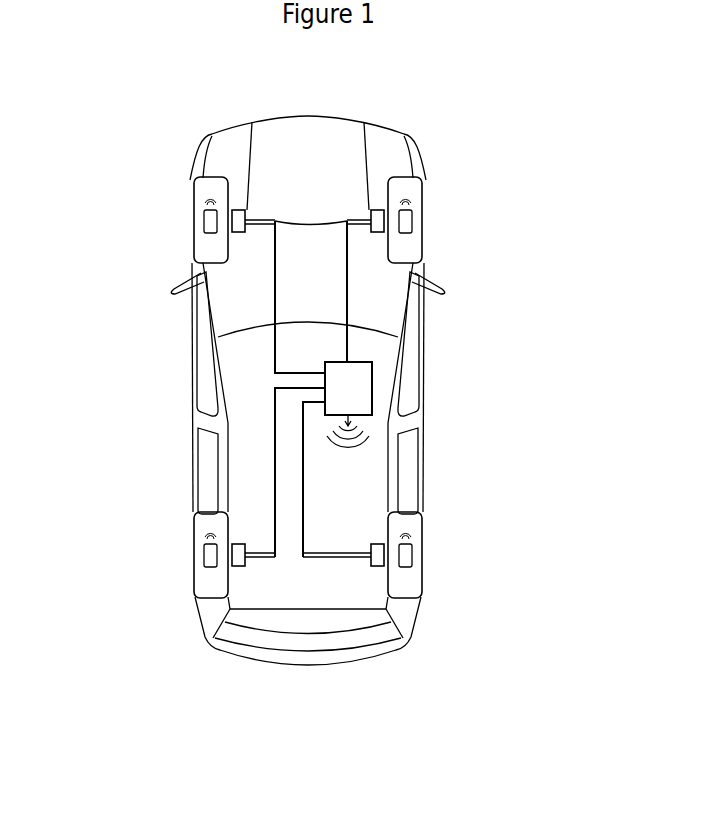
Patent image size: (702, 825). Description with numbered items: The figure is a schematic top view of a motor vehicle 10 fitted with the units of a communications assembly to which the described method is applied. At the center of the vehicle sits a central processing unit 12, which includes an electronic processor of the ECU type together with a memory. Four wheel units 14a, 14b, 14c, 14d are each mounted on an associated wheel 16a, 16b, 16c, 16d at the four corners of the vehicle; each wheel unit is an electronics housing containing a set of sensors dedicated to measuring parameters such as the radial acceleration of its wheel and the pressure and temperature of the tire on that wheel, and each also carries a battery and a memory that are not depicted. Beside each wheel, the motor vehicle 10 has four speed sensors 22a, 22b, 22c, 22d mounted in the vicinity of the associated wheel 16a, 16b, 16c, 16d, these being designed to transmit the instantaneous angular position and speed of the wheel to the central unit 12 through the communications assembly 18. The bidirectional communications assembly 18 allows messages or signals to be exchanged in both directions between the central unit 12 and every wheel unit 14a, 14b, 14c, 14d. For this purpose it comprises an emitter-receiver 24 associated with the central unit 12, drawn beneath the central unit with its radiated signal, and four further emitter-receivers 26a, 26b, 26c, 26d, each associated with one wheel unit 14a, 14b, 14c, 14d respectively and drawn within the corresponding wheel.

The motor vehicle 10 is at (462, 126).
The central processing unit 12 is at (343, 387).
The wheel unit 14a is at (206, 225).
The wheel unit 14b is at (410, 225).
The wheel unit 14c is at (410, 560).
The wheel unit 14d is at (206, 560).
The wheel 16a is at (185, 188).
The wheel 16b is at (432, 188).
The wheel 16c is at (432, 521).
The wheel 16d is at (185, 521).
The bidirectional communications assembly 18 is at (374, 429).
The speed sensor 22a is at (239, 208).
The speed sensor 22b is at (377, 208).
The speed sensor 22c is at (378, 568).
The speed sensor 22d is at (238, 568).
The emitter-receiver 24 is at (365, 416).
The emitter-receiver 26a is at (204, 204).
The emitter-receiver 26b is at (412, 204).
The emitter-receiver 26c is at (412, 538).
The emitter-receiver 26d is at (204, 538).